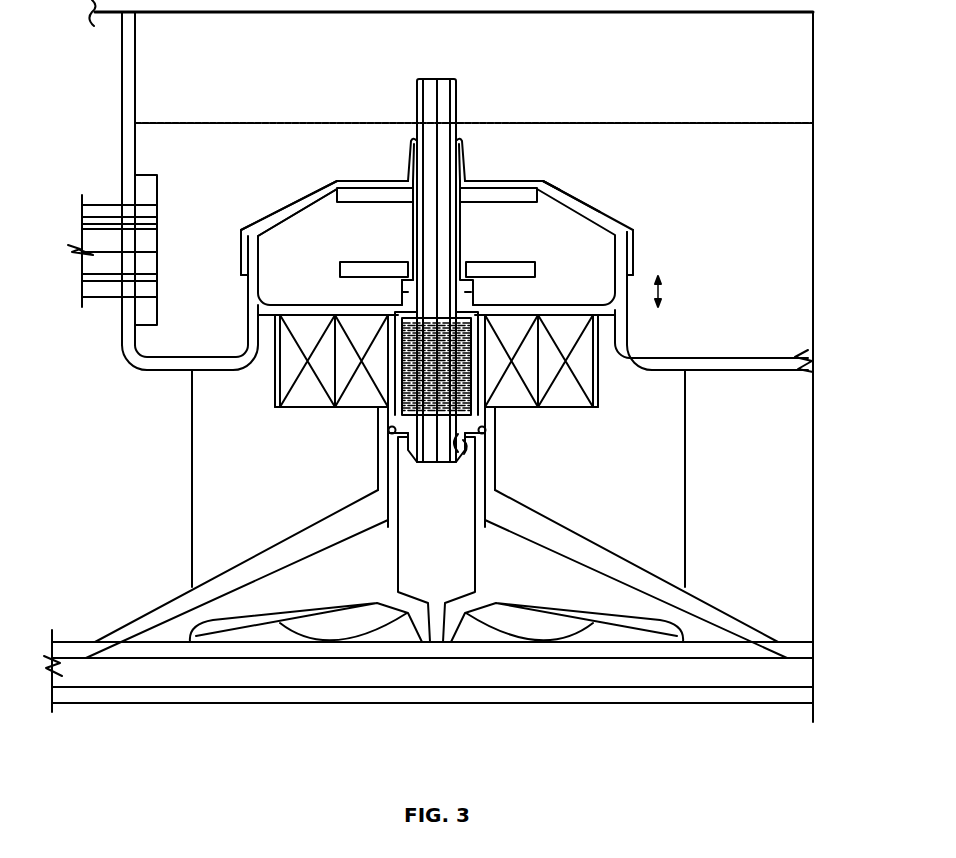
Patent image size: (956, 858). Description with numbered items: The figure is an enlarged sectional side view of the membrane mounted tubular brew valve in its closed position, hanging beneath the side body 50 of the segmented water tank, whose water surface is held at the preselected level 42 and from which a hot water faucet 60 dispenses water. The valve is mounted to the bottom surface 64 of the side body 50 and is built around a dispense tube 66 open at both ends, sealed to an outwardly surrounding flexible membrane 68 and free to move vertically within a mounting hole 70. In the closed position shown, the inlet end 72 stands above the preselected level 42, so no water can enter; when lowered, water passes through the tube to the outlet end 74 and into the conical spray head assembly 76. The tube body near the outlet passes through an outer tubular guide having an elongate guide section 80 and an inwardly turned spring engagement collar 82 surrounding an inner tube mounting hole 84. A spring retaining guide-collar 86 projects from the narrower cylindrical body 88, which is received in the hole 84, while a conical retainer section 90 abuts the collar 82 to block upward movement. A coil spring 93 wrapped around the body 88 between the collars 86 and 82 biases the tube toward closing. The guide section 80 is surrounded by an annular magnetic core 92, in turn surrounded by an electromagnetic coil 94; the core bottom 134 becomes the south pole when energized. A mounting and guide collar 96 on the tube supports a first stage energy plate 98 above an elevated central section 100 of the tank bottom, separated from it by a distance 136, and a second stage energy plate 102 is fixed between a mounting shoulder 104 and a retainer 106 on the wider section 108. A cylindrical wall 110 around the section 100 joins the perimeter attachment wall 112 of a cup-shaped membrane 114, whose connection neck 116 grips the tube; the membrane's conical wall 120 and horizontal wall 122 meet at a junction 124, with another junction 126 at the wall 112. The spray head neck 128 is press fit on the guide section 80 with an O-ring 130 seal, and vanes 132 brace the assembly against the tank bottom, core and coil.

The preselected water level 42 is at (692, 122).
The side body 50 is at (133, 110).
The hot water faucet 60 is at (100, 212).
The bottom surface 64 is at (172, 373).
The dispense tube 66 is at (463, 262).
The flexible membrane 68 is at (602, 213).
The mounting hole 70 is at (453, 308).
The inlet end 72 is at (432, 84).
The outlet end 74 is at (437, 466).
The conical spray head assembly 76 is at (578, 580).
The elongate guide section 80 is at (535, 310).
The spring engagement collar 82 is at (473, 434).
The inner tube mounting hole 84 is at (462, 448).
The spring retaining guide-collar 86 is at (287, 405).
The cylindrical body 88 is at (450, 290).
The conical retainer section 90 is at (470, 447).
The annular magnetic core 92 is at (348, 340).
The coil spring 93 is at (470, 412).
The electromagnetic coil 94 is at (292, 372).
The mounting and guide collar 96 is at (478, 282).
The first stage energy plate 98 is at (358, 265).
The elevated central section 100 is at (303, 312).
The second stage energy plate 102 is at (552, 190).
The mounting shoulder 104 is at (470, 198).
The retainer 106 is at (408, 188).
The wider section 108 is at (410, 235).
The cylindrical wall 110 is at (628, 238).
The perimeter attachment wall 112 is at (632, 265).
The cup-shaped membrane 114 is at (543, 185).
The connection neck 116 is at (408, 160).
The conical wall 120 is at (295, 207).
The horizontal wall 122 is at (505, 183).
The junction 124 is at (337, 180).
The junction 126 is at (240, 230).
The neck 128 is at (382, 470).
The O-ring 130 is at (388, 430).
The vanes 132 is at (192, 462).
The bottom of the core 134 is at (360, 400).
The distance 136 is at (662, 285).